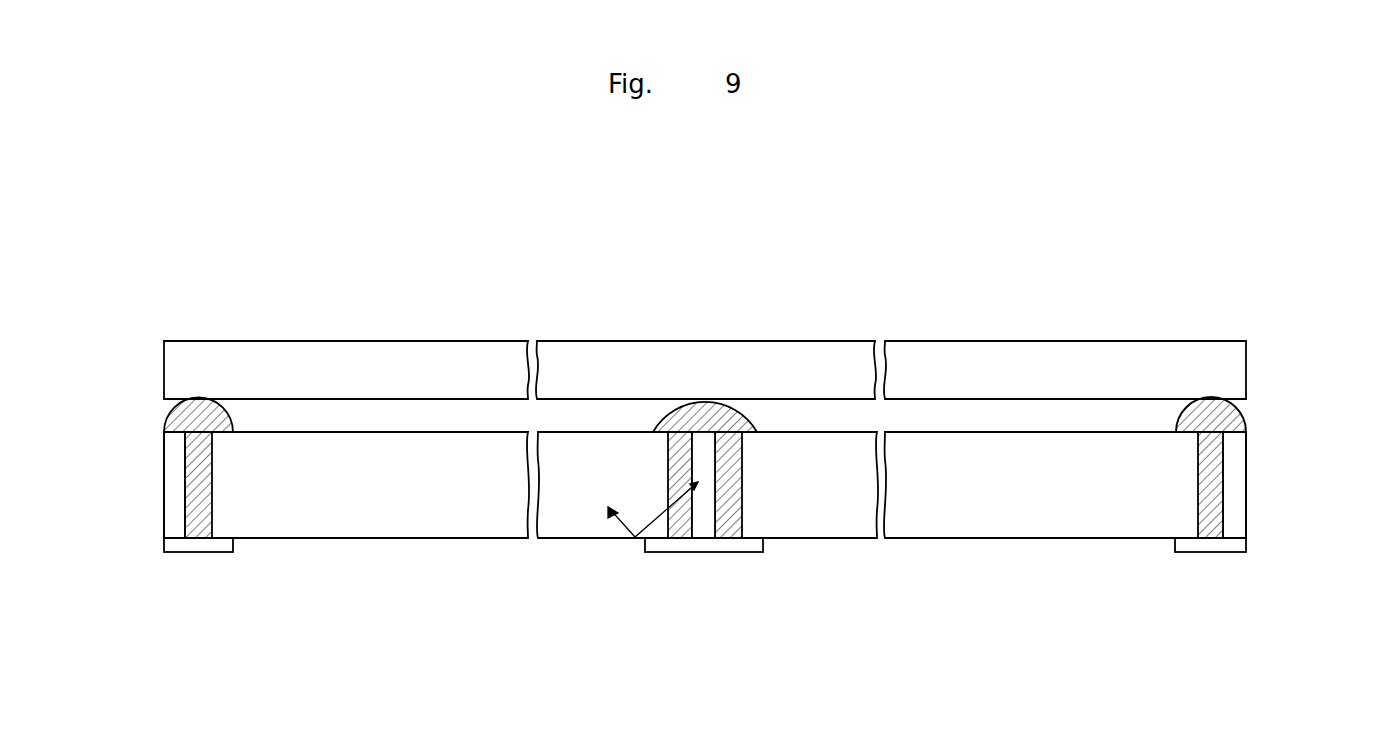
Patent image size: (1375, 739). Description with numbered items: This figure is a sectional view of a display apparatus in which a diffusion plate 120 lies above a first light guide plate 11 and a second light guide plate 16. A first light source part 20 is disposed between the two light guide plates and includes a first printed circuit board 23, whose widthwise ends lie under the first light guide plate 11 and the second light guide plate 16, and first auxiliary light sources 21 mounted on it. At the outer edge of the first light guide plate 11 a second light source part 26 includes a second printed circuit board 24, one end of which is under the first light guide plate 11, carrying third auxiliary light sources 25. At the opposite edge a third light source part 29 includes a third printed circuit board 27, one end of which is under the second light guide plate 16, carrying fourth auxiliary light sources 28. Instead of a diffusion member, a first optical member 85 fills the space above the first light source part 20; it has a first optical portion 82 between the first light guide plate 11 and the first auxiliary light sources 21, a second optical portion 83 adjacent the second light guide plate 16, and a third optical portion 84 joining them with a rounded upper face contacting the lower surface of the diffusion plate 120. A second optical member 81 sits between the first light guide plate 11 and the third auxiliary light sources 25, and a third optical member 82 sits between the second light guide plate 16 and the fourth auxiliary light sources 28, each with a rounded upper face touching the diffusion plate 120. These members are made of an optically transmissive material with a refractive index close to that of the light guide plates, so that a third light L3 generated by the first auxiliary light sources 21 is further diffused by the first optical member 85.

The diffusion plate 120 is at (1235, 370).
The first light guide plate 11 is at (390, 523).
The second light guide plate 16 is at (825, 523).
The second light source part 26 is at (90, 498).
The third auxiliary light sources 25 is at (173, 504).
The second printed circuit board 24 is at (173, 547).
The second optical member 81 is at (200, 523).
The first optical member 85 is at (768, 281).
The third optical portion 84 is at (702, 413).
The second optical portion 83 is at (740, 460).
The first optical portion 82 is at (670, 460).
The first light source part 20 is at (690, 610).
The first auxiliary light sources 21 is at (705, 525).
The first printed circuit board 23 is at (748, 547).
The third light source part 29 is at (1320, 497).
The fourth auxiliary light sources 28 is at (1237, 503).
The third printed circuit board 27 is at (1235, 545).
The third light L3 is at (625, 523).